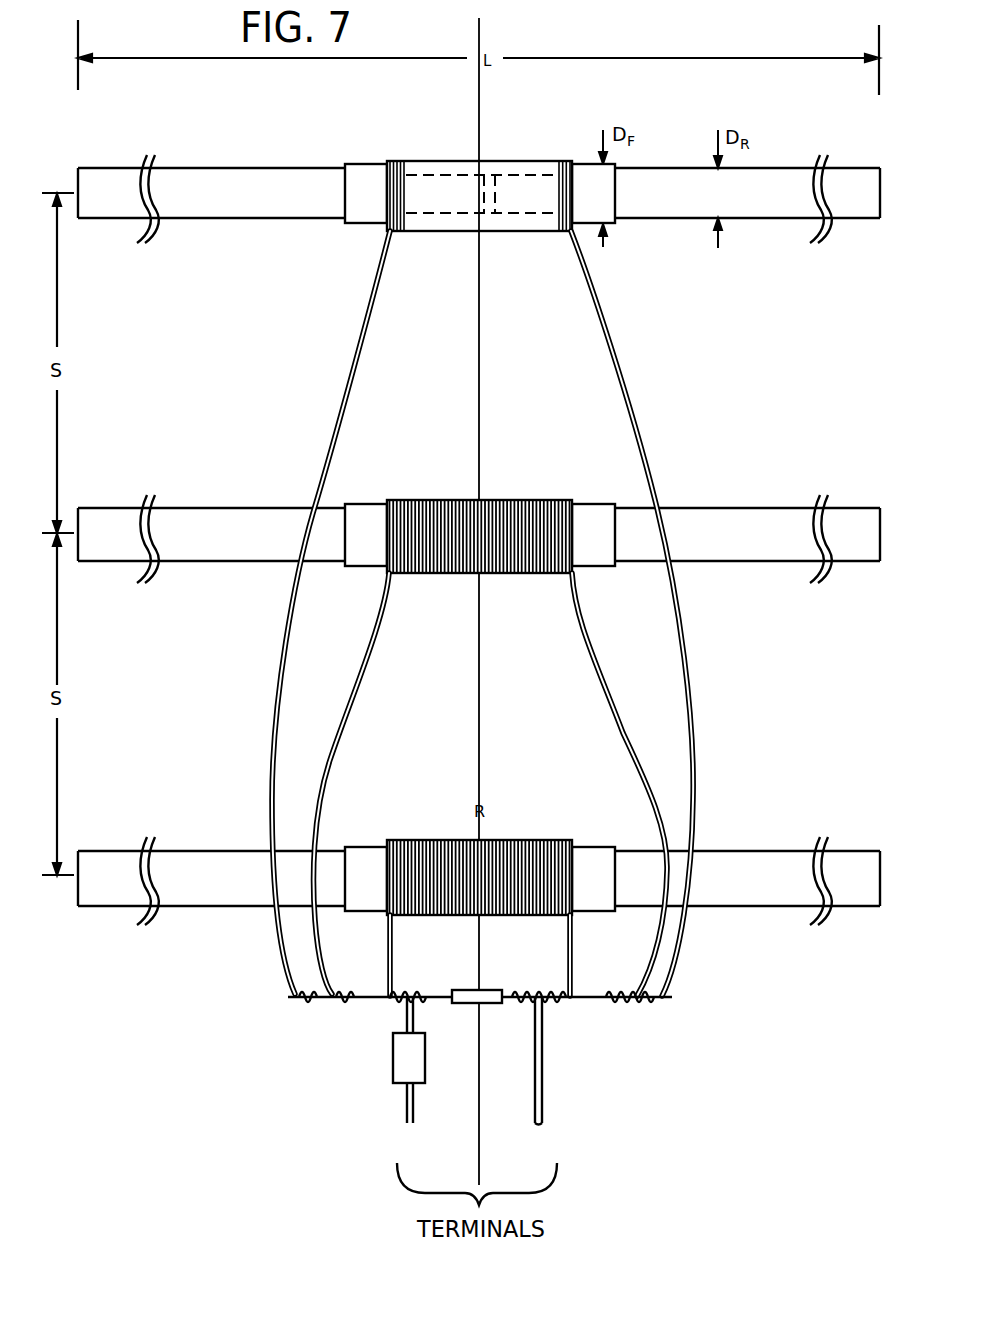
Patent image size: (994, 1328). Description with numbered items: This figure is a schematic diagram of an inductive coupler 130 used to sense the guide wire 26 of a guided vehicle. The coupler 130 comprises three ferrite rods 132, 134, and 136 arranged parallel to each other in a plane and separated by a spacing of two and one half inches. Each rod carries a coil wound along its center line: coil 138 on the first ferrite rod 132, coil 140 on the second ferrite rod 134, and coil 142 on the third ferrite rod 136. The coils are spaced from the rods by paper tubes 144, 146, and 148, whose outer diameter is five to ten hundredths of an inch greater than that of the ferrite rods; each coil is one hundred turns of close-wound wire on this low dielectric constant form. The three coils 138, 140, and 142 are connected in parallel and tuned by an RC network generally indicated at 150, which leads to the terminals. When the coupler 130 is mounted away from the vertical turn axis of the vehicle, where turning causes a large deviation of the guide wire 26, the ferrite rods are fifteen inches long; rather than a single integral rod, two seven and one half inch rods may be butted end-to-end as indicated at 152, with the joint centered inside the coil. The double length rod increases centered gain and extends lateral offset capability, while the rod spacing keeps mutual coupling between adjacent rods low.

The guide wire 26 is at (480, 108).
The coupler 130 is at (657, 128).
The ferrite rod 132 is at (829, 227).
The ferrite rod 134 is at (833, 568).
The ferrite rod 136 is at (774, 852).
The coil 138 is at (484, 160).
The coil 140 is at (553, 498).
The coil 142 is at (505, 840).
The paper tube 144 is at (371, 227).
The paper tube 146 is at (367, 570).
The paper tube 148 is at (377, 826).
The RC network 150 is at (490, 1063).
The butt joint of two rods 152 is at (495, 238).